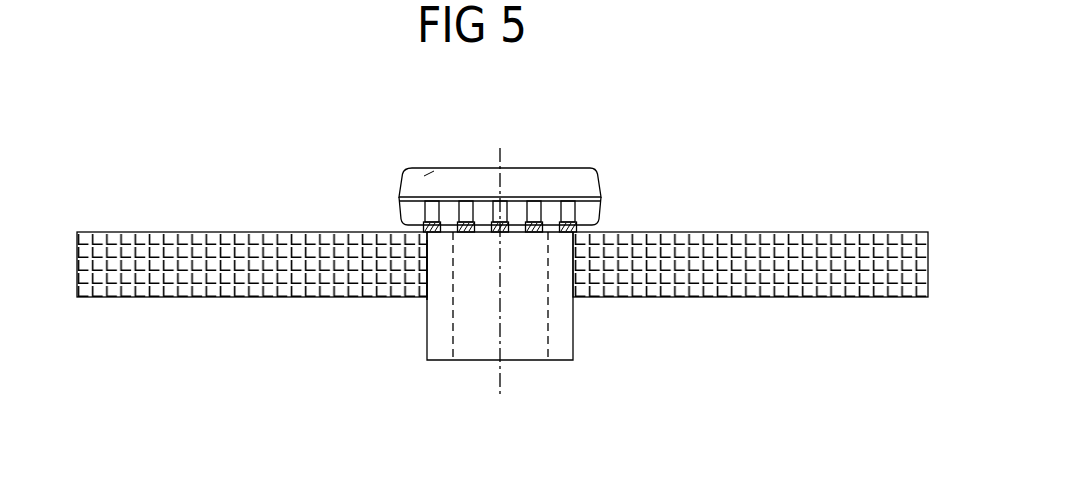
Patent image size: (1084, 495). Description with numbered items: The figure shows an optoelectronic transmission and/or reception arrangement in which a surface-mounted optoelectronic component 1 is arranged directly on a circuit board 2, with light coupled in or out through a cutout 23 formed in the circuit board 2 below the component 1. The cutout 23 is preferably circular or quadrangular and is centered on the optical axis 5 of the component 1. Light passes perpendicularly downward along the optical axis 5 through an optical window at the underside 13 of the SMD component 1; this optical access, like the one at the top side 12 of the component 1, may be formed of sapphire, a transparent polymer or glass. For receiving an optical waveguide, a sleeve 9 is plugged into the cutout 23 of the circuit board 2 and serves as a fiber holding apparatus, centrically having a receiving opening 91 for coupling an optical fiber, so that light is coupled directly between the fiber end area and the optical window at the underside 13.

The optoelectronic component 1 is at (443, 161).
The top side of the component 12 is at (358, 175).
The underside of the component 13 is at (513, 208).
The circuit board 2 is at (690, 230).
The cutout 23 is at (422, 303).
The optical axis 5 is at (498, 388).
The sleeve 9 is at (567, 323).
The receiving opening 91 is at (536, 347).